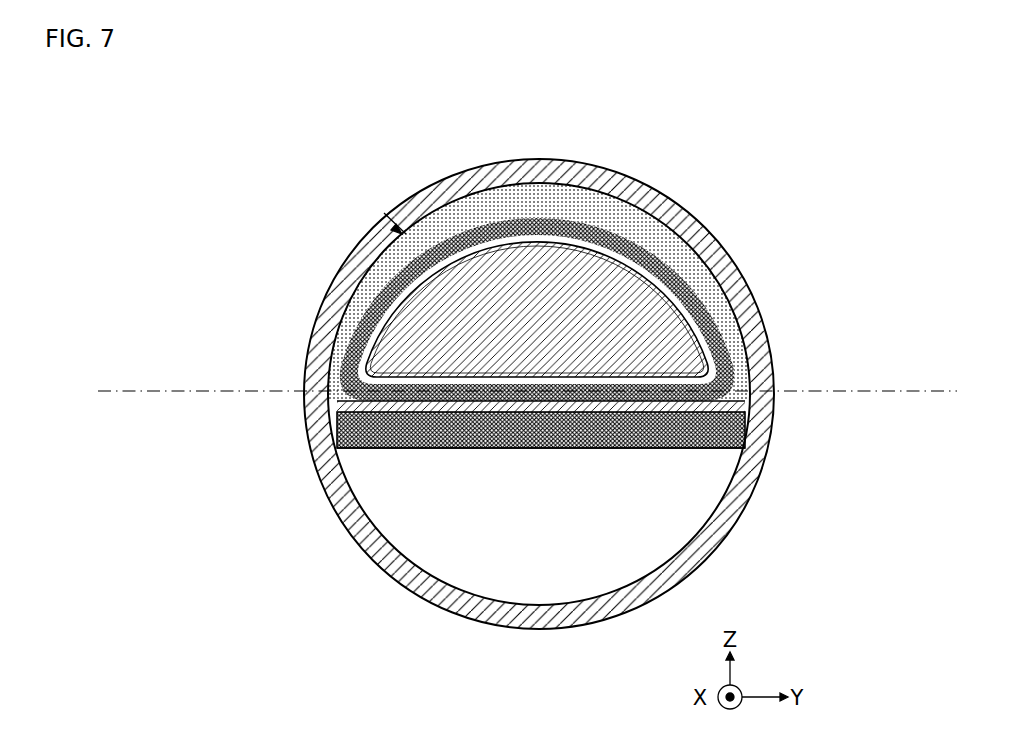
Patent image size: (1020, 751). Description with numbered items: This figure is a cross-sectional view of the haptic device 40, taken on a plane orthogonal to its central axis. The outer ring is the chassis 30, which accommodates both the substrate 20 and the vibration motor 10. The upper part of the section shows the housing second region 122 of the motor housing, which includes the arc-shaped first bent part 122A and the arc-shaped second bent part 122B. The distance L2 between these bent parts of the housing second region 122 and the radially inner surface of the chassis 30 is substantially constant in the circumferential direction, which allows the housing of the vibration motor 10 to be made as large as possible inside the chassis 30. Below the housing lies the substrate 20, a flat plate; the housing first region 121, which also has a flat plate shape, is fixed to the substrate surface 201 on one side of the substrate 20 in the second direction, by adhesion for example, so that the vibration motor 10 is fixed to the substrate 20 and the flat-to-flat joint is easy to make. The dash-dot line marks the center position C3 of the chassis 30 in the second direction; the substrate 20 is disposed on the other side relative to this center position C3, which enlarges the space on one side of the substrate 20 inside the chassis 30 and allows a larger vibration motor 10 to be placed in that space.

The haptic device 40 is at (652, 95).
The vibration motor 10 is at (753, 293).
The chassis 30 is at (670, 203).
The housing second region 122 is at (578, 207).
The first bent part 122A is at (370, 287).
The second bent part 122B is at (680, 258).
The distance L2 is at (407, 232).
The center position C3 is at (923, 390).
The substrate surface 201 is at (725, 408).
The substrate 20 is at (707, 448).
The housing first region 121 is at (335, 450).